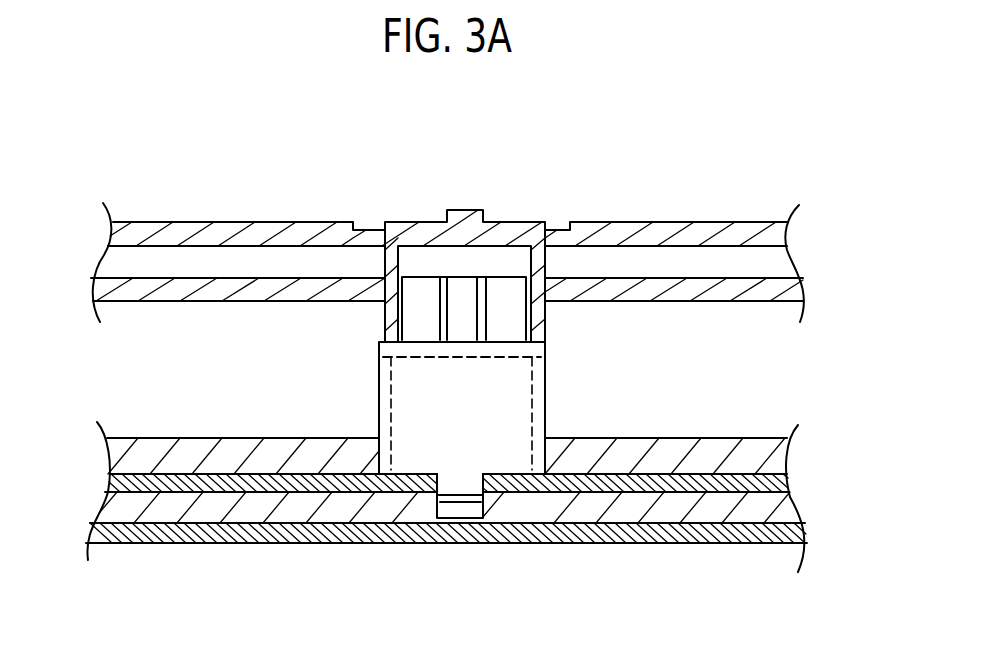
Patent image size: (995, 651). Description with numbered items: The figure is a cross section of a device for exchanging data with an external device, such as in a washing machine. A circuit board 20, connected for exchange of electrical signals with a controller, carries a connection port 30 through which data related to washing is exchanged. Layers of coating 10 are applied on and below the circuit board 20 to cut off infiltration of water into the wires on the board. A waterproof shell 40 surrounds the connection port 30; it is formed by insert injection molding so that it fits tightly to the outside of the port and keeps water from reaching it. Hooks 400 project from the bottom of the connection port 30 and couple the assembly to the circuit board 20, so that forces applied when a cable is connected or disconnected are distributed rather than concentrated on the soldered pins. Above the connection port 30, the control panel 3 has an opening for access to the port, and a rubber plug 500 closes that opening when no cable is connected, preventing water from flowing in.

The control panel 3 is at (255, 233).
The rubber plug 500 is at (402, 232).
The connection port 30 is at (503, 287).
The waterproof shell 40 is at (408, 405).
The hooks 400 is at (462, 507).
The layers of coating 10 is at (642, 485).
The circuit board 20 is at (258, 510).